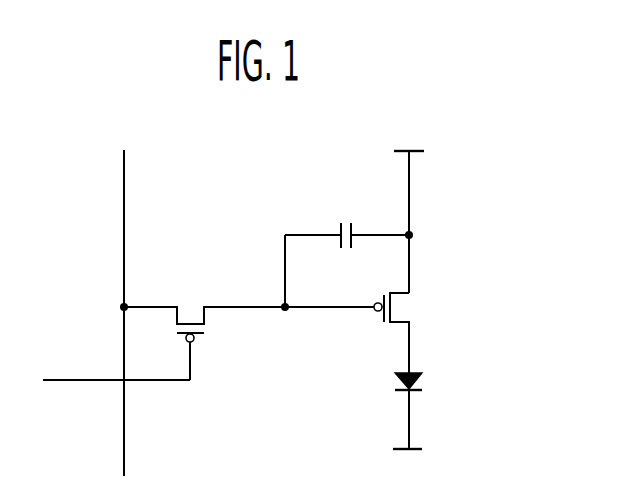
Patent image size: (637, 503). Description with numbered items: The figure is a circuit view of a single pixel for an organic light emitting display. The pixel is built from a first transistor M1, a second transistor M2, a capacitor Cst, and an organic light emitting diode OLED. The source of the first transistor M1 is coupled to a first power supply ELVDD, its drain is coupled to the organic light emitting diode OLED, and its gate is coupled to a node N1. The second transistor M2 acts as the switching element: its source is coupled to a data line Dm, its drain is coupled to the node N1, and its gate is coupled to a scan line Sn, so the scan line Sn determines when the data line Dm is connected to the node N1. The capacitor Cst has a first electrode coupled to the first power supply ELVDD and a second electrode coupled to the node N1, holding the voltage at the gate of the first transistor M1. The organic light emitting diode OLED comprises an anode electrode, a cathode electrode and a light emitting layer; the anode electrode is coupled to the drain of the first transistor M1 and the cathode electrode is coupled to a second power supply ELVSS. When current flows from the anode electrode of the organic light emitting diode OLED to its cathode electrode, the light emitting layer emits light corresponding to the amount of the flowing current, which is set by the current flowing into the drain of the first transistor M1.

The data line Dm is at (123, 296).
The scan line Sn is at (102, 382).
The second transistor M2 is at (204, 330).
The first transistor M1 is at (403, 333).
The node N1 is at (324, 289).
The capacitor Cst is at (349, 221).
The first power supply ELVDD is at (413, 206).
The second power supply ELVSS is at (410, 469).
The organic light emitting diode OLED is at (432, 409).